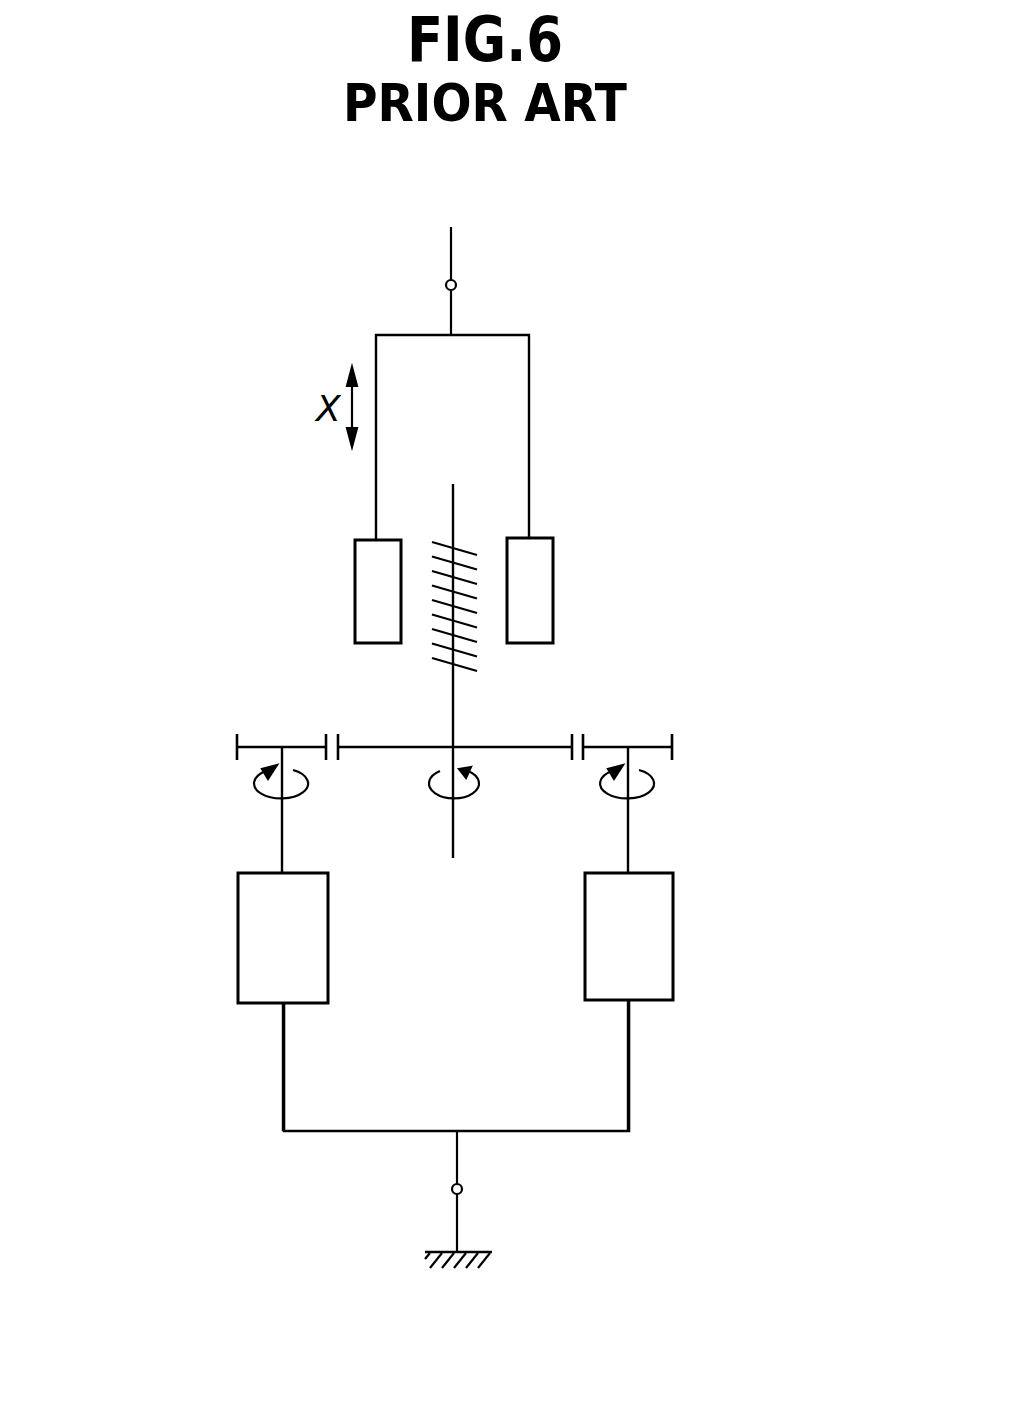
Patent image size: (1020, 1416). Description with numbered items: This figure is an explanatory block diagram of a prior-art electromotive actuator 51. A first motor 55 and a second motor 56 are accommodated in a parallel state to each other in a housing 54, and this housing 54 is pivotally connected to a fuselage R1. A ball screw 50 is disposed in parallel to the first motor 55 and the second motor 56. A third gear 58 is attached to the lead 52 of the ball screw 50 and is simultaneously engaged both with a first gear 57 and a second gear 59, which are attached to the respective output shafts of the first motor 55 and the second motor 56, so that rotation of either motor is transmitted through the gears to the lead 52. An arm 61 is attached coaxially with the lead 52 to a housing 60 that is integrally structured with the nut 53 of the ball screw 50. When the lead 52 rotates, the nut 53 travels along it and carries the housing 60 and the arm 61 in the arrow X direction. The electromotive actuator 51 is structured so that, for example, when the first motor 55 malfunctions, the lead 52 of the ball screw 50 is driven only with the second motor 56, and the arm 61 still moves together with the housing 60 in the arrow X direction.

The ball screw 50 is at (572, 552).
The electromotive actuator 51 is at (823, 843).
The lead 52 is at (452, 708).
The nut 53 is at (355, 568).
The housing 54 is at (598, 1133).
The first motor 55 is at (238, 936).
The second motor 56 is at (673, 930).
The first gear 57 is at (258, 746).
The third gear 58 is at (381, 750).
The second gear 59 is at (650, 746).
The housing 60 is at (530, 448).
The arm 61 is at (450, 314).
The fuselage R1 is at (470, 1264).